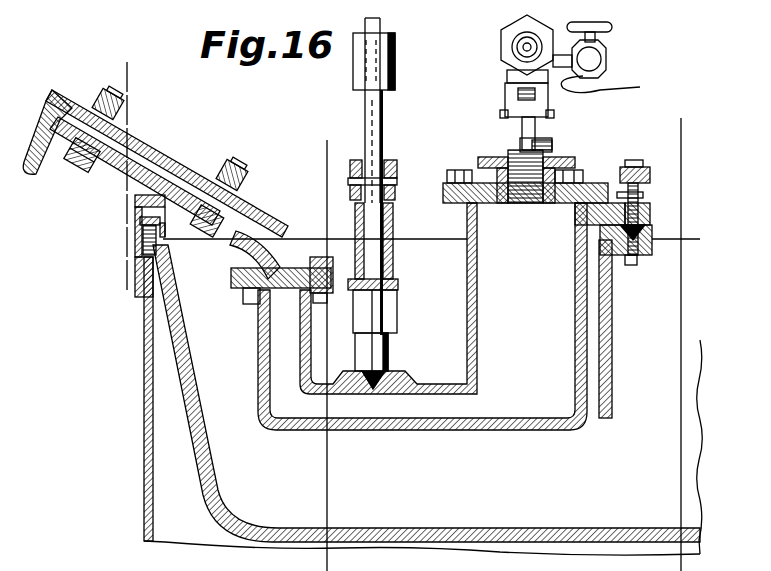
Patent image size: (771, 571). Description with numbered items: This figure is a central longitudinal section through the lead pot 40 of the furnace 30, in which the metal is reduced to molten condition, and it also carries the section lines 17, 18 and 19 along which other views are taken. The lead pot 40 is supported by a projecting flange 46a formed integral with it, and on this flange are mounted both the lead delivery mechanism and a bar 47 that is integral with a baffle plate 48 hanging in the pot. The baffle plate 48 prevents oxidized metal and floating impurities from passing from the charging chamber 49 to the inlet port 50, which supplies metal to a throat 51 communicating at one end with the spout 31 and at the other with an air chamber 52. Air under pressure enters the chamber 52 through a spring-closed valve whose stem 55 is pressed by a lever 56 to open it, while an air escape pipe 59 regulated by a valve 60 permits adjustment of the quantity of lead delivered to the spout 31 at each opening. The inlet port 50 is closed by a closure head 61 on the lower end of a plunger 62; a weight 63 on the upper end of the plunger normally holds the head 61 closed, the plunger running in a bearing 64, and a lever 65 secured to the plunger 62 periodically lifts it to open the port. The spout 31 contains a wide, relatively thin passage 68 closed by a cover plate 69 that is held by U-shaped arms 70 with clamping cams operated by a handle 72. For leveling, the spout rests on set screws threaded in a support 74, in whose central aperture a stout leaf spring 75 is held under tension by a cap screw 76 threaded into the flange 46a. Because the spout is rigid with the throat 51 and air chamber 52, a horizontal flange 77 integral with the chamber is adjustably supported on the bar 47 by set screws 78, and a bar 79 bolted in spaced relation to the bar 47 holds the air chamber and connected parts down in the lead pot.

The section line 17— 17 is at (327, 148).
The section line 18— 18 is at (681, 128).
The section line 19— 19 is at (82, 78).
The furnace 30 is at (144, 490).
The spout 31 is at (38, 175).
The lead pot 40 is at (218, 452).
The projecting flange 46a is at (135, 250).
The bar 47 is at (640, 265).
The baffle plate 48 is at (612, 400).
The charging chamber 49 is at (588, 322).
The inlet port 50 is at (374, 395).
The throat 51 is at (312, 412).
The air chamber 52 is at (526, 310).
The valve stem 55 is at (520, 48).
The lever 56 is at (553, 132).
The air escape pipe 59 is at (612, 86).
The valve 60 is at (600, 48).
The closure head 61 is at (380, 348).
The plunger 62 is at (386, 118).
The weight 63 is at (398, 62).
The bearing 64 is at (394, 232).
The lever 65 is at (393, 170).
The passage 68 is at (62, 98).
The cover plate 69 is at (172, 160).
The U-shaped arms 70 is at (230, 166).
The handle 72 is at (248, 184).
The support 74 is at (135, 200).
The leaf spring 75 is at (143, 232).
The cap screw 76 is at (140, 221).
The horizontal flange 77 is at (652, 215).
The set screws 78 is at (648, 197).
The bar 79 is at (636, 178).